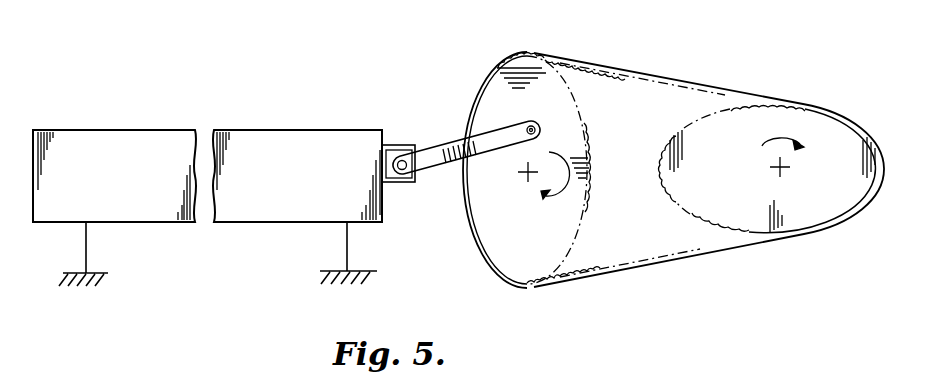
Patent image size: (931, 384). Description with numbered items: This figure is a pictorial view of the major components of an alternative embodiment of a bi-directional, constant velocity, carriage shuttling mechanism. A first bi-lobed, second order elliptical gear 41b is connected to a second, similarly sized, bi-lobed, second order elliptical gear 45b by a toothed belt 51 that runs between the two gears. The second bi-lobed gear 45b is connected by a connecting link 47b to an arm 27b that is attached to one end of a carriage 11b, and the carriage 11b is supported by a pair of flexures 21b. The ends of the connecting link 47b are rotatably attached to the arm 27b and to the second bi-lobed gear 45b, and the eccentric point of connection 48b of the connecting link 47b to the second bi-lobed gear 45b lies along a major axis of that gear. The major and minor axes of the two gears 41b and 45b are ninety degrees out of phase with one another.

The carriage 11b is at (281, 143).
The flexures 21b is at (86, 255).
The arm 27b is at (402, 183).
The connecting link 47b is at (448, 150).
The eccentric point of connection 48b is at (534, 125).
The second bi-lobed, second order elliptical gear 45b is at (519, 289).
The toothed belt 51 is at (652, 76).
The first bi-lobed, second order elliptical gear 41b is at (838, 208).